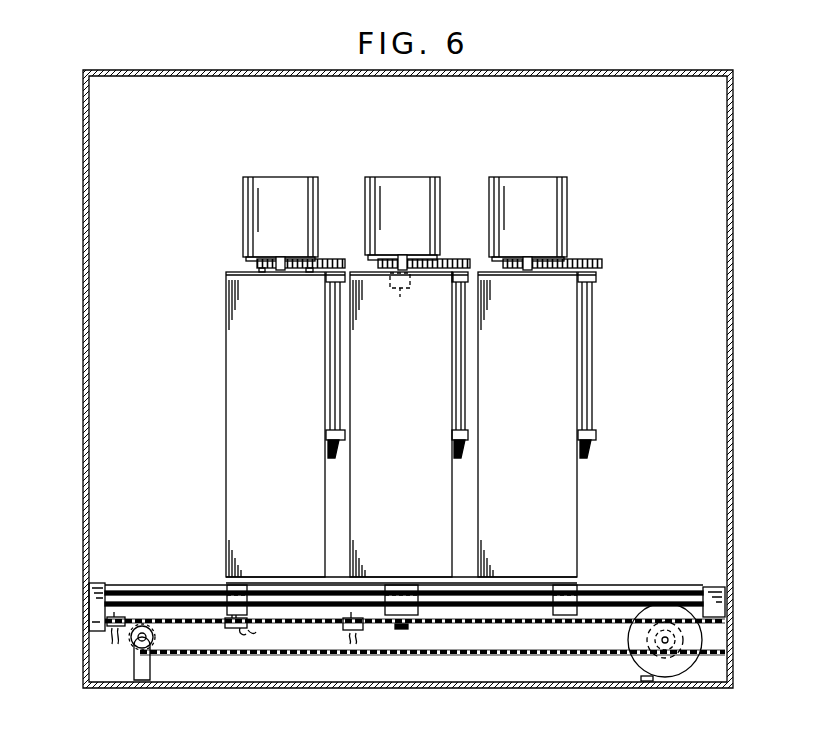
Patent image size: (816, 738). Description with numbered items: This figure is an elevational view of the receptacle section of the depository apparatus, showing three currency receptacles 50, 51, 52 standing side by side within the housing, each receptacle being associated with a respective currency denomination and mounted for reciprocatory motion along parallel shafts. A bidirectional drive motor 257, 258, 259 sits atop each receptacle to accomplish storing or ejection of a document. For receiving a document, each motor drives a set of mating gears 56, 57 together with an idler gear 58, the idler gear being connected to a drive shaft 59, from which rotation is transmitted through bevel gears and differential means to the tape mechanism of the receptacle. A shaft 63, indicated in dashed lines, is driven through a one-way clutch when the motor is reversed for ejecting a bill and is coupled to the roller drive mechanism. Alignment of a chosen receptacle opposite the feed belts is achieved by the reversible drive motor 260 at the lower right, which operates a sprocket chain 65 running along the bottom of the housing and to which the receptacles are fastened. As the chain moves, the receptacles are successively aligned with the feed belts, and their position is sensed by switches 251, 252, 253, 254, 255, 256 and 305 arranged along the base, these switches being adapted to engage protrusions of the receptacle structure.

The bidirectional drive motor 259 is at (271, 177).
The bidirectional drive motor 258 is at (396, 177).
The bidirectional drive motor 257 is at (520, 177).
The idler gear 58 is at (329, 258).
The mating gear 56 is at (265, 271).
The mating gear 57 is at (310, 271).
The drive shaft 59 is at (331, 327).
The shaft 63 is at (400, 300).
The currency receptacle 52 is at (288, 493).
The currency receptacle 51 is at (412, 493).
The currency receptacle 50 is at (534, 493).
The switch 251 is at (103, 638).
The switch 252 is at (92, 655).
The switch 253 is at (236, 630).
The switch 254 is at (253, 672).
The switch 305 is at (256, 676).
The switch 255 is at (360, 632).
The switch 256 is at (379, 679).
The sprocket chain 65 is at (535, 650).
The reversible drive motor 260 is at (700, 656).